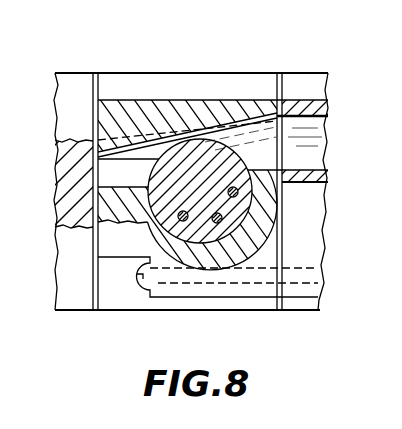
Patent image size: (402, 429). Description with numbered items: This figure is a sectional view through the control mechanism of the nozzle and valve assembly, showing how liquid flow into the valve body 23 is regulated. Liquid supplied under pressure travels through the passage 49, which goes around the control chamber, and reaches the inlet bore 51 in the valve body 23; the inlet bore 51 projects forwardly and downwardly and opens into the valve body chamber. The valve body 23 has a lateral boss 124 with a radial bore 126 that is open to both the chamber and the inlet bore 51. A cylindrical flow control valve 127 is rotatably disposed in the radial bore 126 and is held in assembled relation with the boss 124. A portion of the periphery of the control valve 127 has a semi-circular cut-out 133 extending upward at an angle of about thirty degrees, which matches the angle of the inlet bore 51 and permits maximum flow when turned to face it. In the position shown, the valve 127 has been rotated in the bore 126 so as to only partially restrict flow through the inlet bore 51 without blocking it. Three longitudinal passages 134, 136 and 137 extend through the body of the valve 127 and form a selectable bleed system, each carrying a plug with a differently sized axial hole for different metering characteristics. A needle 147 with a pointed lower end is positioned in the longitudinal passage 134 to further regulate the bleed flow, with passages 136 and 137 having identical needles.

The semi-circular cut-out 133 is at (180, 160).
The cylindrical flow control valve 127 is at (220, 160).
The passage 49 is at (315, 143).
The needle 147 is at (238, 193).
The radial bore 126 is at (258, 227).
The lateral boss 124 is at (150, 228).
The valve body 23 is at (120, 300).
The longitudinal passage 137 is at (182, 221).
The longitudinal passage 136 is at (216, 223).
The longitudinal passage 134 is at (234, 198).
The inlet bore 51 is at (132, 179).